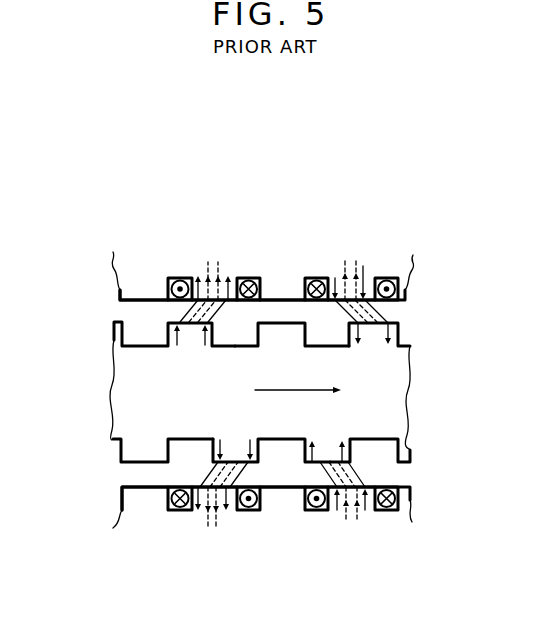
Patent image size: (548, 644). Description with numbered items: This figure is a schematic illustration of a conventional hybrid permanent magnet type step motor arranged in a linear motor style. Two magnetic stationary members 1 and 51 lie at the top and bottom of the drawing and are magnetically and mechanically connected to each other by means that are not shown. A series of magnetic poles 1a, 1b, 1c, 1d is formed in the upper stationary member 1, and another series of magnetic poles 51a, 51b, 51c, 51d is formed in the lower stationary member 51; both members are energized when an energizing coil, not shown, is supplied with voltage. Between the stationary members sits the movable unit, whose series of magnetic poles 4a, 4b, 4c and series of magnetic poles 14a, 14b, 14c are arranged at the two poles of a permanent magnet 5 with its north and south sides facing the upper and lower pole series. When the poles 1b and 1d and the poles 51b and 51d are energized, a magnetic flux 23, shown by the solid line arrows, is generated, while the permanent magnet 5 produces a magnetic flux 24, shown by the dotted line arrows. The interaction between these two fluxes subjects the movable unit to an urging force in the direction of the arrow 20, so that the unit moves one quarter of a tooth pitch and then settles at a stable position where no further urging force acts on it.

The magnetic stationary member 1 is at (276, 262).
The magnetic pole 1a is at (130, 292).
The magnetic pole 1b is at (226, 272).
The magnetic pole 1c is at (290, 278).
The magnetic pole 1d is at (370, 280).
The magnetic pole 4a is at (155, 340).
The magnetic pole 4b is at (305, 324).
The magnetic pole 4c is at (396, 339).
The permanent magnet 5 is at (403, 392).
The arrow 20 is at (298, 393).
The magnetic pole 14a is at (124, 446).
The magnetic pole 14b is at (213, 453).
The magnetic pole 14c is at (352, 447).
The magnetic stationary member 51 is at (245, 525).
The magnetic pole 51a is at (122, 500).
The magnetic pole 51b is at (197, 506).
The magnetic pole 51c is at (300, 497).
The magnetic pole 51d is at (335, 503).
The magnetic flux 23 is at (380, 309).
The magnetic flux 24 is at (211, 513).